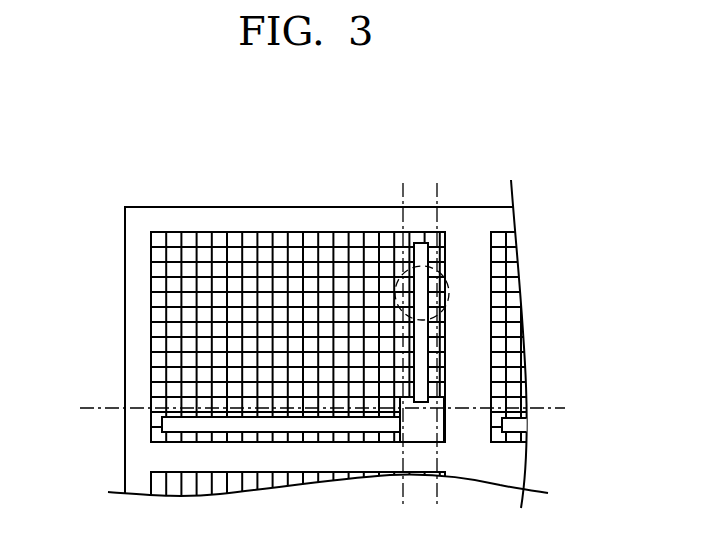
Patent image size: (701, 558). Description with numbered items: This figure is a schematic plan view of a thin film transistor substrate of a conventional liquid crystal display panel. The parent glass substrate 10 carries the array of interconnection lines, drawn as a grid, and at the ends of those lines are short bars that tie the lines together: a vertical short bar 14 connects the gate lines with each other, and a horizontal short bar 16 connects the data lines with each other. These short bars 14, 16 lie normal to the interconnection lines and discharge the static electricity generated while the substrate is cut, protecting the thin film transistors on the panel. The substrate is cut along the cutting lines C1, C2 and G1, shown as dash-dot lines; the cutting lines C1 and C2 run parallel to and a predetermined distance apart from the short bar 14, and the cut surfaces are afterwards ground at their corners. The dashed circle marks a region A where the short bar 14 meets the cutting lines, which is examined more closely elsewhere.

The parent glass substrate 10 is at (135, 277).
The short bar 14 is at (424, 359).
The short bar 16 is at (190, 422).
The region A is at (450, 290).
The cutting line G1 is at (400, 330).
The cutting line C1 is at (441, 330).
The cutting line C2 is at (299, 406).